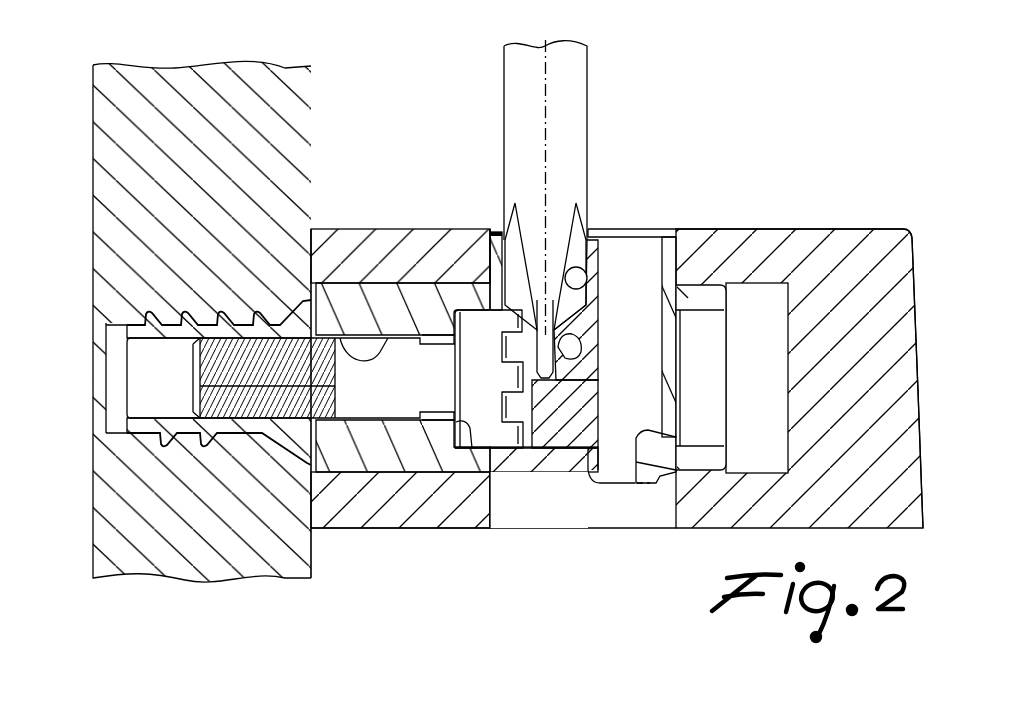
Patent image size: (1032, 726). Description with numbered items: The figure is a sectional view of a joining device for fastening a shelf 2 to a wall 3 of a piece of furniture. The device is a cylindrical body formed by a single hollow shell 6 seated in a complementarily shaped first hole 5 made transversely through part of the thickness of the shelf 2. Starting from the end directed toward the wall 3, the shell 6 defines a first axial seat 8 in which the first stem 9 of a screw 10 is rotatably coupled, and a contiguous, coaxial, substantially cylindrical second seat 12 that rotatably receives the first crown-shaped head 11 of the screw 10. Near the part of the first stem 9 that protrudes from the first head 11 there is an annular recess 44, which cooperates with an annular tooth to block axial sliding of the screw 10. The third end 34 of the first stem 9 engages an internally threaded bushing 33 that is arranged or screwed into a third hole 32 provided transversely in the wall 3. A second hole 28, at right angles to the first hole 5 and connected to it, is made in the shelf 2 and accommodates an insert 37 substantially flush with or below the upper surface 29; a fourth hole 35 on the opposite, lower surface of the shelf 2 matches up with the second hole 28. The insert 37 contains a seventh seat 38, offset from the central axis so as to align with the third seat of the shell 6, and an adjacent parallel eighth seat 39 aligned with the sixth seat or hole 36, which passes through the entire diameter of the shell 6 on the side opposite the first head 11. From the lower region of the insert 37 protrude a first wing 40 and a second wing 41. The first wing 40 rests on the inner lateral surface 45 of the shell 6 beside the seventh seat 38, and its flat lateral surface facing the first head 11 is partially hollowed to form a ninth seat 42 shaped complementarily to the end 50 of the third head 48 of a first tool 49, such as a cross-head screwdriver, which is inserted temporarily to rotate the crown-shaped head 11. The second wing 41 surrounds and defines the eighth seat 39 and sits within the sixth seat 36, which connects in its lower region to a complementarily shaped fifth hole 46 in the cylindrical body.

The shelf 2 is at (617, 362).
The wall 3 is at (168, 321).
The first hole 5 is at (768, 313).
The shell 6 is at (383, 303).
The first axial seat 8 is at (362, 350).
The first stem 9 is at (358, 405).
The screw 10 is at (291, 463).
The first crown-shaped head 11 is at (475, 345).
The second seat 12 is at (462, 450).
The second hole 28 is at (614, 228).
The upper surface 29 is at (868, 226).
The third hole 32 is at (168, 407).
The internally threaded bushing 33 is at (148, 436).
The third end 34 is at (219, 377).
The fourth hole 35 is at (545, 528).
The sixth seat or hole 36 is at (615, 436).
The insert 37 is at (494, 233).
The seventh seat 38 is at (584, 274).
The eighth seat 39 is at (744, 362).
The first wing 40 is at (574, 375).
The second wing 41 is at (682, 388).
The ninth seat 42 is at (575, 347).
The annular recess 44 is at (436, 358).
The inner lateral surface 45 is at (584, 439).
The fifth hole 46 is at (655, 462).
The third head 48 is at (541, 307).
The first tool 49 is at (503, 60).
The end 50 is at (578, 449).